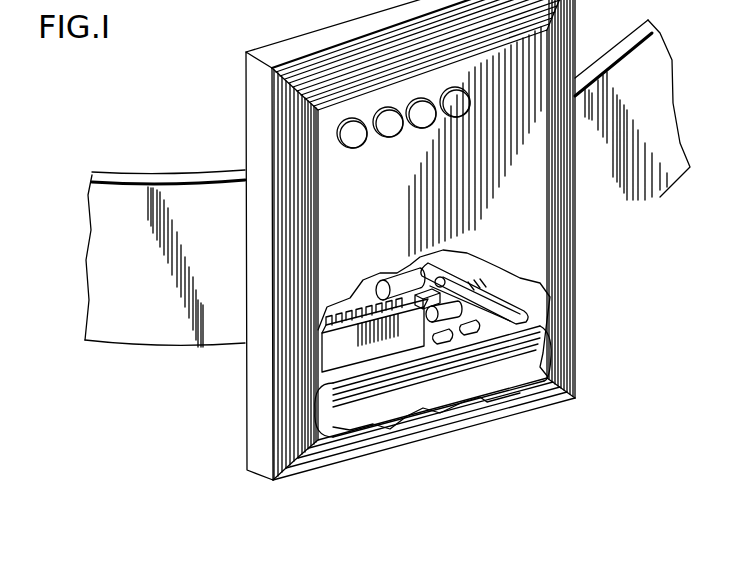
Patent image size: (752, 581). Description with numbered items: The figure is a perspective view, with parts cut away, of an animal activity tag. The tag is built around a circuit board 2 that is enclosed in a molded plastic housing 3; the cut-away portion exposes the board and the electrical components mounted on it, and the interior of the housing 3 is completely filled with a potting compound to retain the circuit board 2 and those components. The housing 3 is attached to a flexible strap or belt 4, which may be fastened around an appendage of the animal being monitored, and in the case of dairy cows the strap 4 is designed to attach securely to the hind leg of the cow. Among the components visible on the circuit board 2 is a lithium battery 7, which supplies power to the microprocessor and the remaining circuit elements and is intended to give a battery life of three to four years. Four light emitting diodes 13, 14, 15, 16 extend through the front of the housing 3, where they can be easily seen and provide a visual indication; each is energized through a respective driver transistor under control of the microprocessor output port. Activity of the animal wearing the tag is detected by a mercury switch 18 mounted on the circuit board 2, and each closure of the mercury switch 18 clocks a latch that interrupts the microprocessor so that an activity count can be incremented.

The circuit board 2 is at (467, 305).
The molded plastic housing 3 is at (305, 122).
The flexible strap 4 is at (170, 173).
The lithium battery 7 is at (510, 377).
The light emitting diode 13 is at (355, 147).
The light emitting diode 14 is at (390, 136).
The light emitting diode 15 is at (418, 128).
The light emitting diode 16 is at (455, 117).
The mercury switch 18 is at (490, 293).